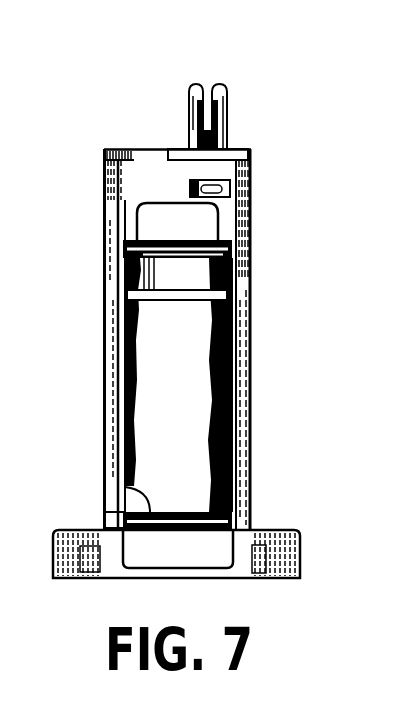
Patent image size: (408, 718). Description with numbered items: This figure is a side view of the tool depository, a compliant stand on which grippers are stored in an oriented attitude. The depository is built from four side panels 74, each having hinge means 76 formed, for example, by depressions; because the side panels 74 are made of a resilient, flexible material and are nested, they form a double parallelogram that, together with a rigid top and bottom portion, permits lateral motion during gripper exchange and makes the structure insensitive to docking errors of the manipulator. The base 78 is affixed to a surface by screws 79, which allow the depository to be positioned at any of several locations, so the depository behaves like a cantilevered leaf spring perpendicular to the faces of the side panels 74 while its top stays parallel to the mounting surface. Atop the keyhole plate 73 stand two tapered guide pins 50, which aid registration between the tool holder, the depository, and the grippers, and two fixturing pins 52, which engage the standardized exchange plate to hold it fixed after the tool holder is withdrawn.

The tapered guide pin 50 is at (193, 92).
The fixturing pin 52 is at (224, 126).
The keyhole plate 73 is at (133, 148).
The side panel 74 is at (103, 408).
The hinge means 76 is at (127, 275).
The base 78 is at (300, 552).
The screw 79 is at (90, 530).